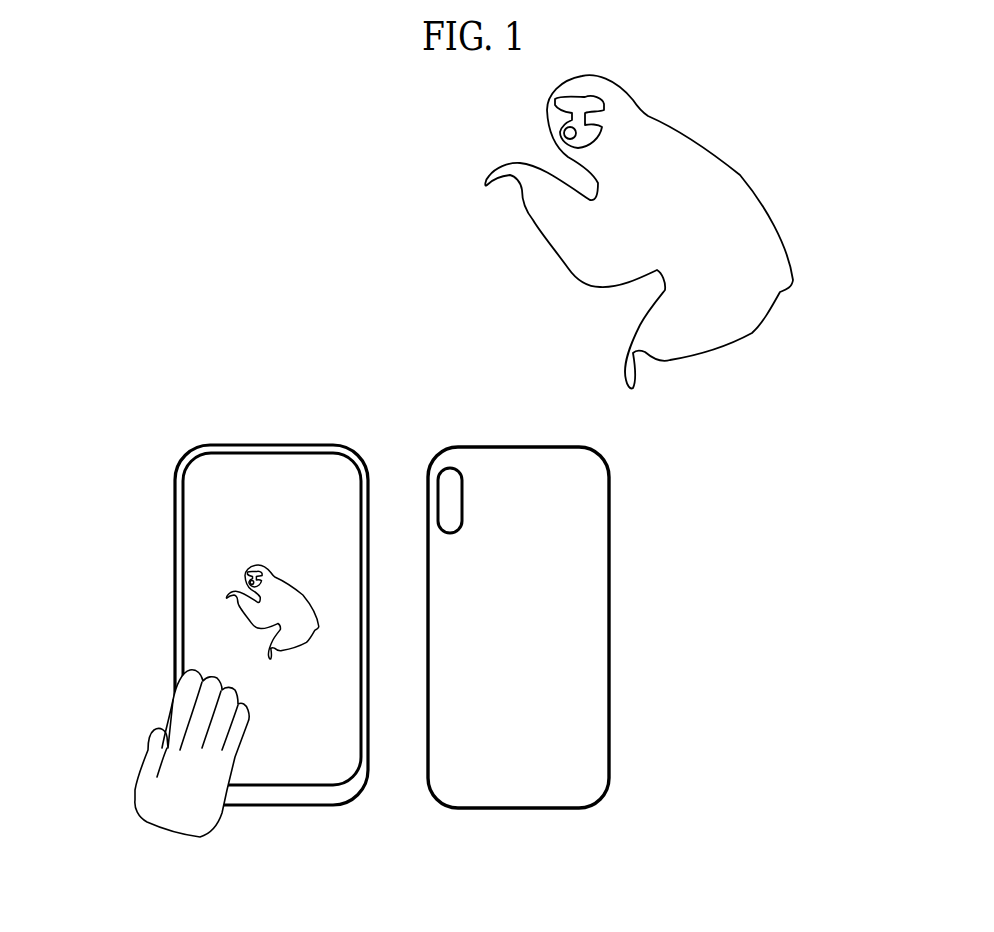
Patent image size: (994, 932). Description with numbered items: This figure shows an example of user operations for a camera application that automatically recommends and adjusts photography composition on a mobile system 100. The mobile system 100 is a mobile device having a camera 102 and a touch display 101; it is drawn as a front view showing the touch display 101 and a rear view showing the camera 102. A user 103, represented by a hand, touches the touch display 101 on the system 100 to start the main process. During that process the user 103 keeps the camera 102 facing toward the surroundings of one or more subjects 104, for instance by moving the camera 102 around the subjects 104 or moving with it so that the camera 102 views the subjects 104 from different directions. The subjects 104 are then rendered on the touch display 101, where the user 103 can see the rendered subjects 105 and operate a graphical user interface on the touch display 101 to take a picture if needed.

The mobile system 100 is at (470, 446).
The touch display 101 is at (247, 480).
The camera 102 is at (463, 500).
The user 103 is at (152, 768).
The subject 104 is at (753, 333).
The rendered subject 105 is at (318, 612).